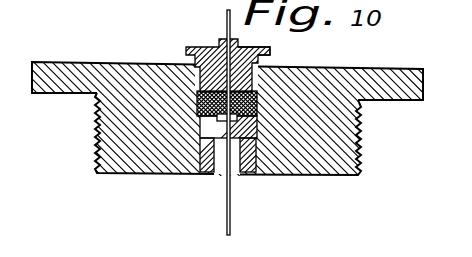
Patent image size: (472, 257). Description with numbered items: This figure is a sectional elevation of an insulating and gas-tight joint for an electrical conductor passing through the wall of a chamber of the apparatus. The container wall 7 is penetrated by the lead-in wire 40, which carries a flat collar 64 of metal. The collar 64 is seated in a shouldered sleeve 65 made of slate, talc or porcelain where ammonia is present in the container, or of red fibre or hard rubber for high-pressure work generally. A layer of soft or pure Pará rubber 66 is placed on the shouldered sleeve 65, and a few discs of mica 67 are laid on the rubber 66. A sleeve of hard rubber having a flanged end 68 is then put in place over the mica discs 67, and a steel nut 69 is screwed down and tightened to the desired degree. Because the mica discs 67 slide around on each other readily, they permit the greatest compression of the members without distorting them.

The container wall 7 is at (324, 162).
The lead-in wire 40 is at (227, 23).
The flat collar 64 is at (255, 138).
The shouldered sleeve 65 is at (200, 137).
The layer of soft rubber 66 is at (198, 93).
The mica discs 67 is at (259, 93).
The flanged end of hard rubber sleeve 68 is at (238, 42).
The steel nut 69 is at (270, 51).